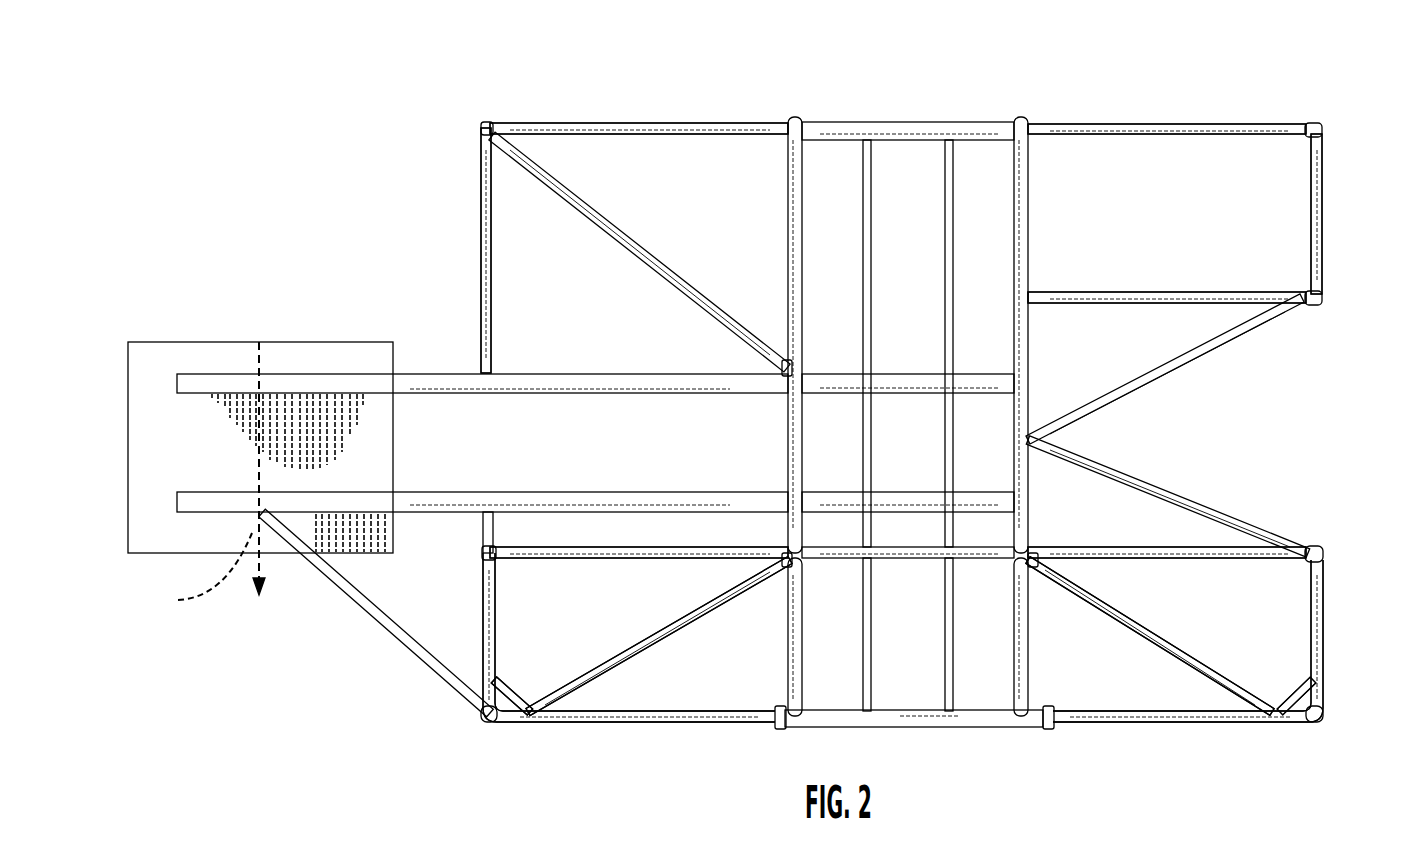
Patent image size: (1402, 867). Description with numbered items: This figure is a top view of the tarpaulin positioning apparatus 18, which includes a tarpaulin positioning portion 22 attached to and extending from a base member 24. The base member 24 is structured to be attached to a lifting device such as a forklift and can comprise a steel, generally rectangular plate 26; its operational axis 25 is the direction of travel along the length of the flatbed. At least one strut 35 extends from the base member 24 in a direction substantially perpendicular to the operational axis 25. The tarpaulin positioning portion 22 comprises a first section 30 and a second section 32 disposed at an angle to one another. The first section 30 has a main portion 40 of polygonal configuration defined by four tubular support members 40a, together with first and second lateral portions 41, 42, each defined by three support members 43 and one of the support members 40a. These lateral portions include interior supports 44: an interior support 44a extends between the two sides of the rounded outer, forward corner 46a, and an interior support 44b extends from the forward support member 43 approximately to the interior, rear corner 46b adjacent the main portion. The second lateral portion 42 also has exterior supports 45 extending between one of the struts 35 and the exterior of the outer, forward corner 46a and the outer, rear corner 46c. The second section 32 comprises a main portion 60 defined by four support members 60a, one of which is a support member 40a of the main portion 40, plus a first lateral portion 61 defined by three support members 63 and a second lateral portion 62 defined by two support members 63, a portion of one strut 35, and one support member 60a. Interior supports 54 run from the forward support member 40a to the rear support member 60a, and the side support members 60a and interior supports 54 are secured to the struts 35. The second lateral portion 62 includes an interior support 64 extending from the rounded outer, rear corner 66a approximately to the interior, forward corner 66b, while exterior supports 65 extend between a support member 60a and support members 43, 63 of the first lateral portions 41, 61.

The tarpaulin positioning apparatus 18 is at (420, 290).
The tarpaulin positioning portion 22 is at (1121, 731).
The base member 24 is at (196, 338).
The operational axis 25 is at (188, 576).
The plate 26 is at (146, 340).
The first section 30 is at (923, 733).
The second section 32 is at (906, 117).
The strut 35 is at (176, 381).
The main portion 40 is at (976, 736).
The support members 40a is at (803, 632).
The first lateral portion 41 is at (1211, 735).
The second lateral portion 42 is at (597, 735).
The support members 43 is at (496, 620).
The interior supports 44 is at (535, 690).
The interior support 44a is at (500, 718).
The interior support 44b is at (697, 622).
The exterior supports 45 is at (362, 688).
The outer, forward corner 46a is at (485, 722).
The interior, rear corner 46b is at (785, 565).
The outer, rear corner 46c is at (497, 554).
The interior supports 54 is at (948, 330).
The main portion 60 is at (944, 117).
The support members 60a is at (903, 140).
The first lateral portion 61 is at (1144, 117).
The second lateral portion 62 is at (601, 112).
The support members 63 is at (663, 134).
The interior support 64 is at (633, 226).
The exterior supports 65 is at (1157, 386).
The outer, rear corner 66a is at (489, 120).
The interior, forward corner 66b is at (787, 368).